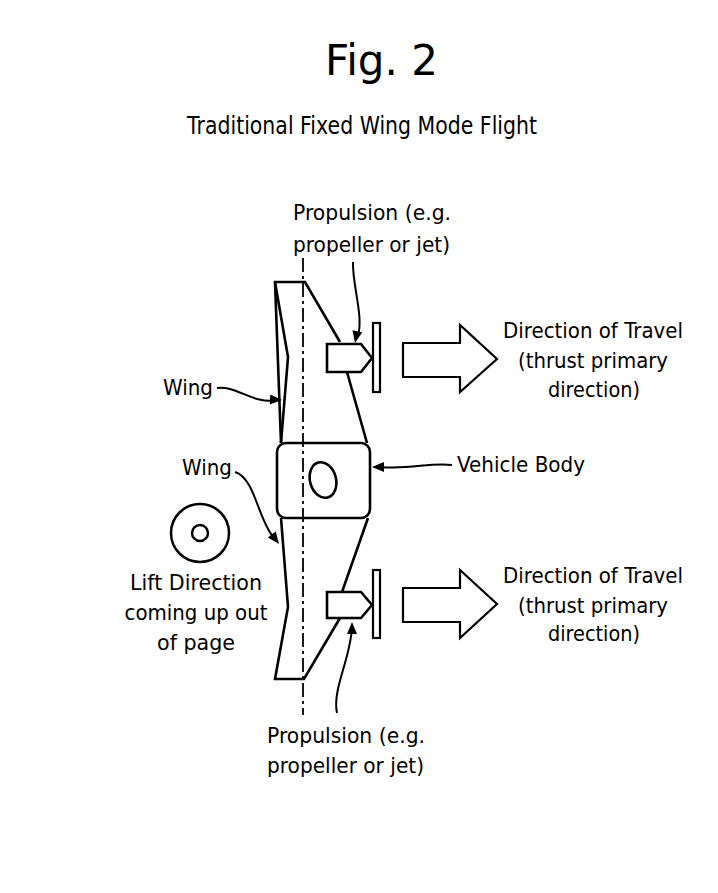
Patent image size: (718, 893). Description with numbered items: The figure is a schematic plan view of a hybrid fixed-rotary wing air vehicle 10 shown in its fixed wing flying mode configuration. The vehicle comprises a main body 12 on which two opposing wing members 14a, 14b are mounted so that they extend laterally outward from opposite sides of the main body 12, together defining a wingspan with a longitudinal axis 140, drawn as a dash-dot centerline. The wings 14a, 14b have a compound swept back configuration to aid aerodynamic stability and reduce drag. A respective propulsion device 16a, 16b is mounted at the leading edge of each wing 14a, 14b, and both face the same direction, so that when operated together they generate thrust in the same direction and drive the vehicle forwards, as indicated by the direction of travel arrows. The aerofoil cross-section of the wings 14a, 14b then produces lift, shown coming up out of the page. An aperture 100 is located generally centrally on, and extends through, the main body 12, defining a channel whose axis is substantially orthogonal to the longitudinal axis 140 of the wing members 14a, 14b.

The air vehicle 10 is at (243, 316).
The main body 12 is at (362, 500).
The wing member 14a is at (363, 415).
The wing member 14b is at (363, 547).
The propulsion device 16a is at (380, 338).
The propulsion device 16b is at (380, 632).
The aperture 100 is at (311, 478).
The longitudinal axis 140 is at (303, 703).